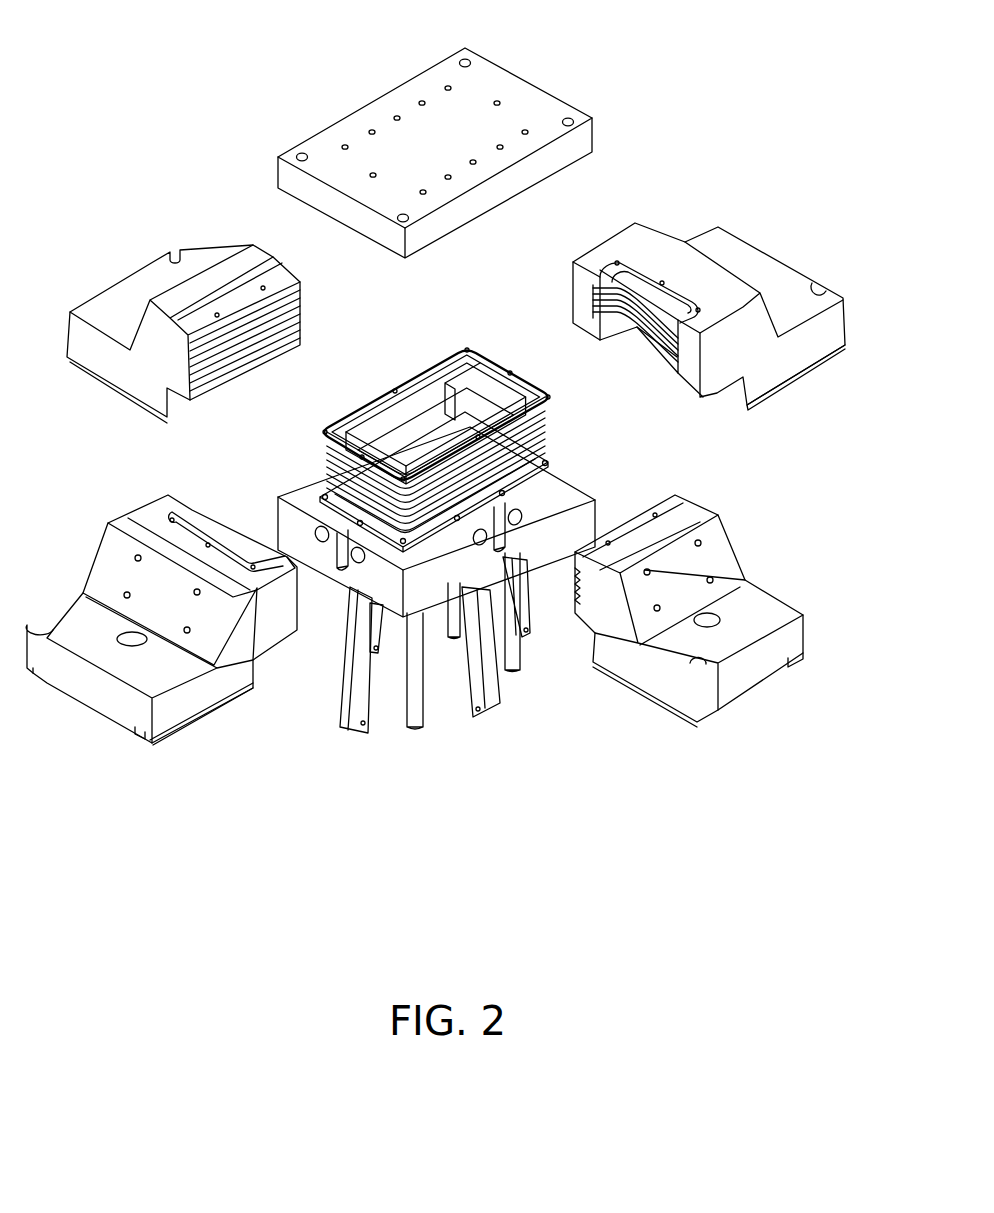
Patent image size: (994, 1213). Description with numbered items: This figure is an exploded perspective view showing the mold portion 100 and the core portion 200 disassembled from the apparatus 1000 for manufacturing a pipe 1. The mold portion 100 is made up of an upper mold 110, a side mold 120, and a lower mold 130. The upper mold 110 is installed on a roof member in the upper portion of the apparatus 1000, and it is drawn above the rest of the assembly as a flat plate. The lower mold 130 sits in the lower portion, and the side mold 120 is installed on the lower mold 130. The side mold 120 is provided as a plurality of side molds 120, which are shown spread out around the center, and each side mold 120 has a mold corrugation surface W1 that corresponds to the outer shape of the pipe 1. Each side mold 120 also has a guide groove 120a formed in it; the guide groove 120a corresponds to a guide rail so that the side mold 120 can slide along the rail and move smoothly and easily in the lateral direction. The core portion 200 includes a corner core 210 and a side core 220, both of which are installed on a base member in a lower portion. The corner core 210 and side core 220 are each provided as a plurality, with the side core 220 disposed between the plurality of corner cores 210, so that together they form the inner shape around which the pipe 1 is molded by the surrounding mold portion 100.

The apparatus for manufacturing a pipe 1000 is at (190, 28).
The pipe 1 is at (435, 594).
The mold portion 100 is at (328, 842).
The upper mold 110 is at (507, 80).
The side mold 120 is at (435, 565).
The guide groove 120a is at (138, 737).
The lower mold 130 is at (598, 468).
The core portion 200 is at (495, 842).
The corner core 210 is at (453, 380).
The side core 220 is at (403, 410).
The mold corrugation surface W1 is at (237, 340).